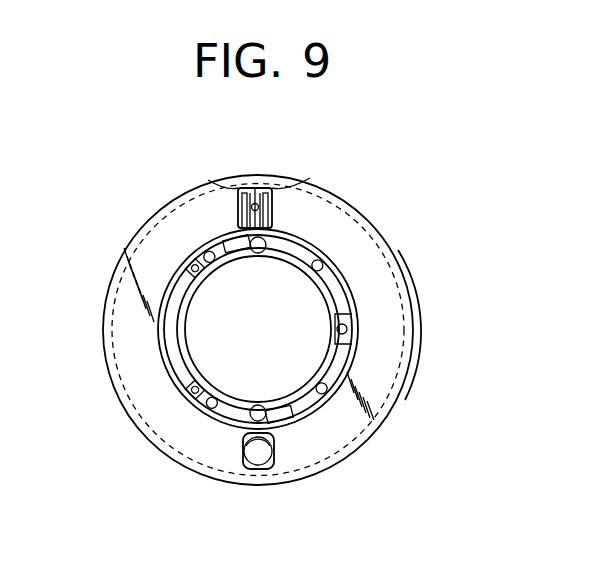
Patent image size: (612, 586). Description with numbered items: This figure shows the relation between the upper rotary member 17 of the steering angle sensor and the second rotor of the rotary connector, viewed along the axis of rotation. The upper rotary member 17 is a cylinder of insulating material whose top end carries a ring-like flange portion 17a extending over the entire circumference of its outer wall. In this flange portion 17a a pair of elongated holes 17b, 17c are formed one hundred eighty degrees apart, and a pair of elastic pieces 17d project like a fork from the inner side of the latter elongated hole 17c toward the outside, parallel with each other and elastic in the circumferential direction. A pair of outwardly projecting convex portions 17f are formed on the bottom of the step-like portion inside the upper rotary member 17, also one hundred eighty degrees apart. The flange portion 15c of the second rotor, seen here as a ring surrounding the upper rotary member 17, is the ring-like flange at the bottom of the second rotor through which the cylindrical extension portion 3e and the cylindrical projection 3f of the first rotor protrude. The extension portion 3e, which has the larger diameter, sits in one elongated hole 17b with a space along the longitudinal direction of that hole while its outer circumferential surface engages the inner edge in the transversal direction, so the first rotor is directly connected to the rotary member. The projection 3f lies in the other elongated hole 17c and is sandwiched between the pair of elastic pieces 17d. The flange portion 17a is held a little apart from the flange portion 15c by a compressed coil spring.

The upper rotary member 17 is at (368, 215).
The flange portion 17a is at (410, 336).
The elongated hole 17b is at (269, 470).
The elongated hole 17c is at (256, 189).
The elastic pieces 17d is at (229, 184).
The convex portions 17f is at (254, 244).
The flange portion 15c is at (410, 284).
The extension portion 3e is at (257, 457).
The projection 3f is at (240, 212).